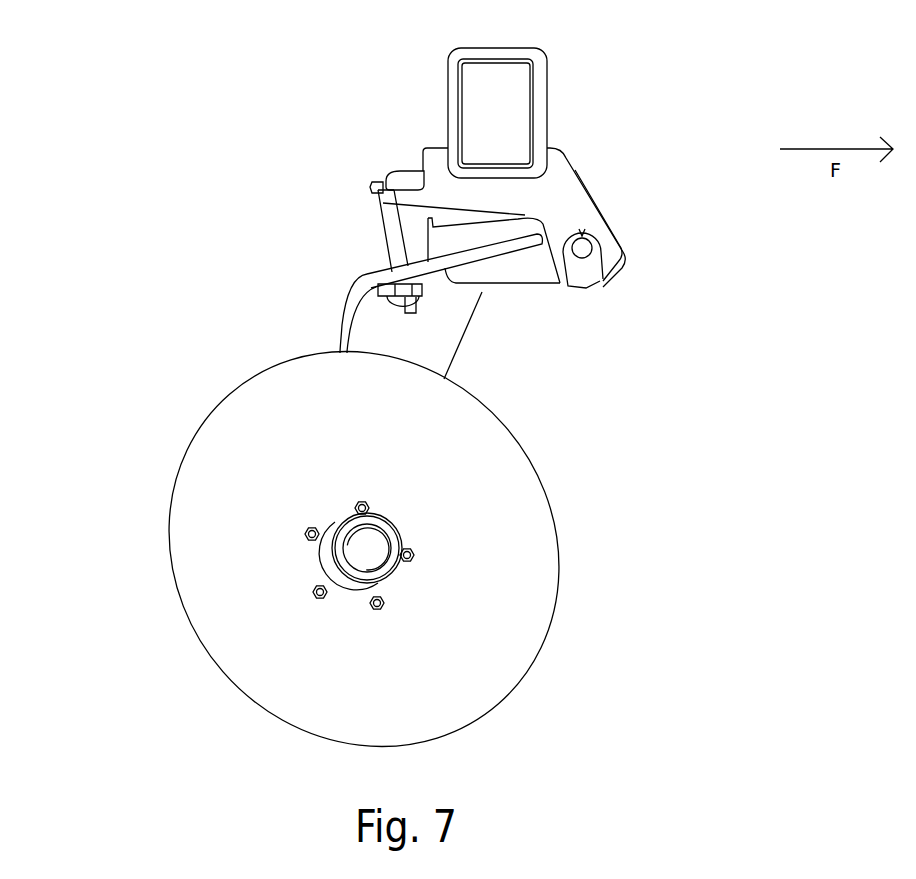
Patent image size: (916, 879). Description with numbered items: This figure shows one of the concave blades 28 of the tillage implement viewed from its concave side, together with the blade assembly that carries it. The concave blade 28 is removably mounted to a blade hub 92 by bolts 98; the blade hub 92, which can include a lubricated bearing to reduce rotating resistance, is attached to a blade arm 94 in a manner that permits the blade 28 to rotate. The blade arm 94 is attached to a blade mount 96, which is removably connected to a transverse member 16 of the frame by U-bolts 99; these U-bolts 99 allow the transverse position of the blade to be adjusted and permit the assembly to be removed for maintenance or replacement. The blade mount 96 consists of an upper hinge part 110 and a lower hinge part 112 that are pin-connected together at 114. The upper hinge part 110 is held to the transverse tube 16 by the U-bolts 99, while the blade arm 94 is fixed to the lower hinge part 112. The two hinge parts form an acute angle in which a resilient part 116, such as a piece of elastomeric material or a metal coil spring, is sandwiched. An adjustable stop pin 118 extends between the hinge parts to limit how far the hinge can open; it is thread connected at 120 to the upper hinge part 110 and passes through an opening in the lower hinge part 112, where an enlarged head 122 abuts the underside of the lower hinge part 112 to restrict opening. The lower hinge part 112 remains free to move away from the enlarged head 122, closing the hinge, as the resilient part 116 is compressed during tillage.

The transverse member 16 is at (525, 121).
The concave blade 28 is at (479, 717).
The blade hub 92 is at (347, 585).
The blade arm 94 is at (340, 314).
The blade mount 96 is at (592, 183).
The bolts 98 is at (306, 529).
The U-bolts 99 is at (502, 47).
The upper hinge part 110 is at (582, 220).
The lower hinge part 112 is at (517, 283).
The pin connection 114 is at (582, 260).
The resilient part 116 is at (457, 222).
The adjustable stop pin 118 is at (383, 237).
The threaded connection 120 is at (383, 187).
The enlarged head 122 is at (414, 294).